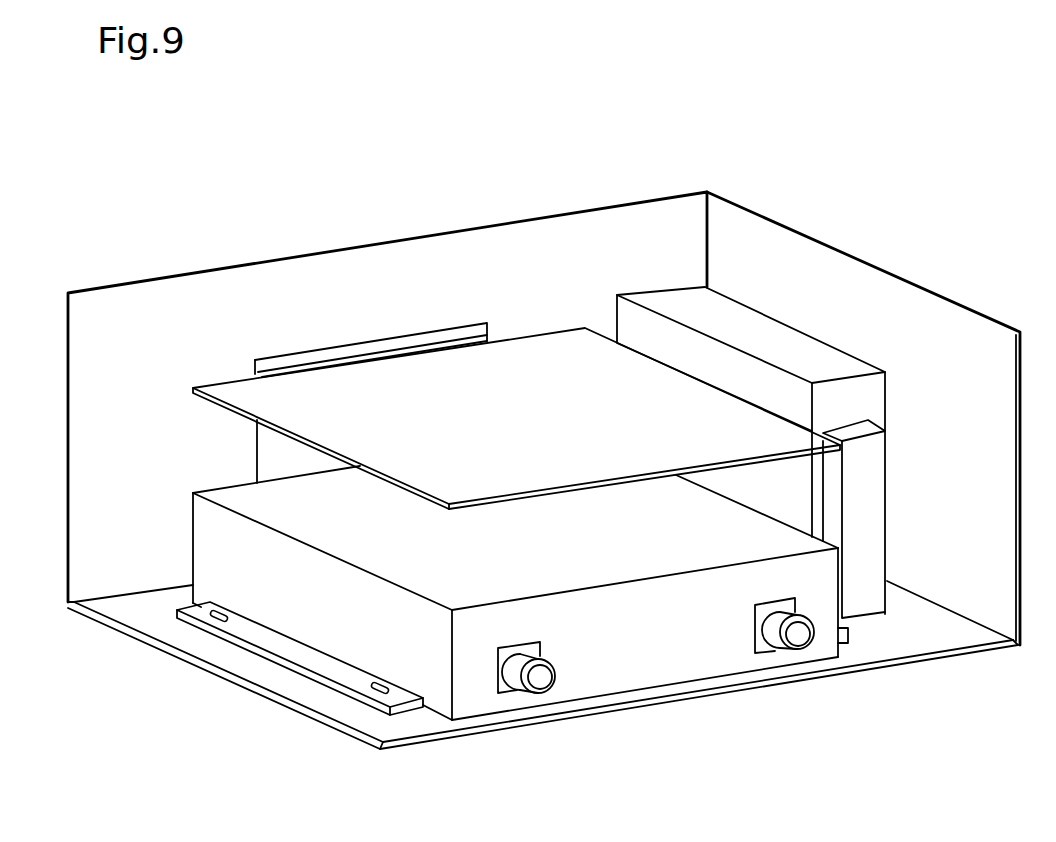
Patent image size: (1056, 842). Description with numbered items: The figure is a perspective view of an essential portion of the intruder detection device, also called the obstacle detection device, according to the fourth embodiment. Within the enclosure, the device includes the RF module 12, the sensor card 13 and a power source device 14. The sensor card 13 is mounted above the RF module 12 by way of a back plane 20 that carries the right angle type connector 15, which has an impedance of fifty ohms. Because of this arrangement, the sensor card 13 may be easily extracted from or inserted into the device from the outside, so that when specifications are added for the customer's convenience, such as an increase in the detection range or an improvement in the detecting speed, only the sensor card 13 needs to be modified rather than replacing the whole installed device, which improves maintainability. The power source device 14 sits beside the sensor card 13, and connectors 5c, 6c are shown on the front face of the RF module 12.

The RF module 12 is at (345, 620).
The sensor card 13 is at (520, 353).
The power source device 14 is at (813, 358).
The right angle type connector 15 is at (380, 355).
The back plane 20 is at (277, 455).
The connector 5c is at (797, 640).
The connector 6c is at (533, 687).